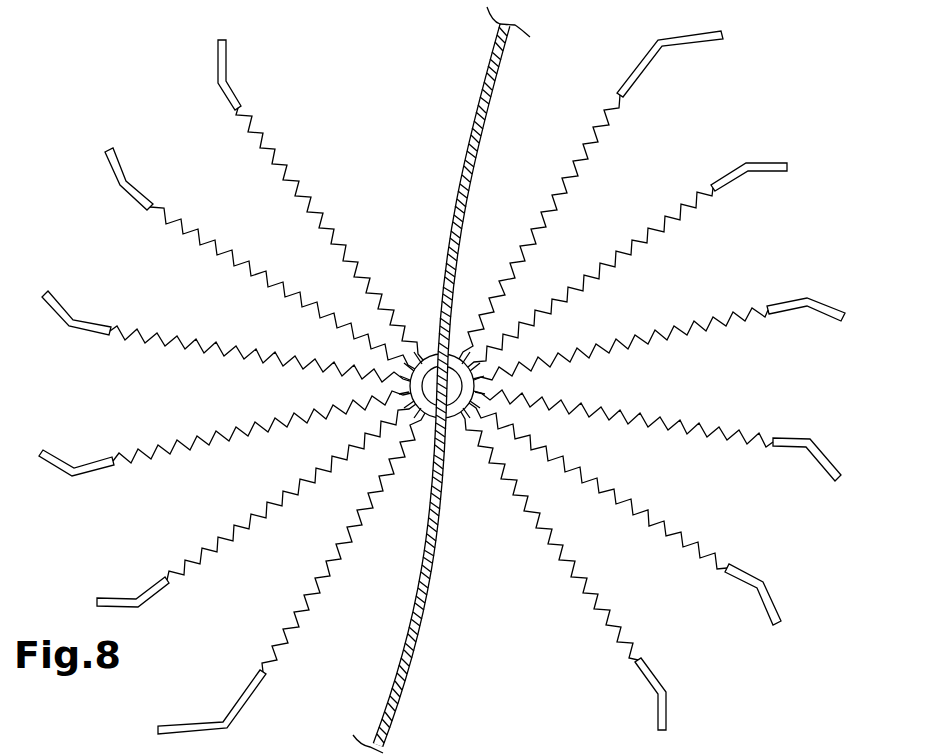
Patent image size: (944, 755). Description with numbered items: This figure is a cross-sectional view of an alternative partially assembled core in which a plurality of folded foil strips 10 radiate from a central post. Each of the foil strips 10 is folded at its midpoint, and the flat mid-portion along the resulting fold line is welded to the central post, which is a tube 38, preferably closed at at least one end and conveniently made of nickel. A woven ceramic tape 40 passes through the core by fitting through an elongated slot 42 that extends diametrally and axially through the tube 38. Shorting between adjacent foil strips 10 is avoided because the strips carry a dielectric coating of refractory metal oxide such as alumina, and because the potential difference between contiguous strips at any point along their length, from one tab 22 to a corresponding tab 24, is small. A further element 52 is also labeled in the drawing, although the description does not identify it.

The foil strips 10 is at (228, 423).
The tab 22 is at (118, 162).
The tab 24 is at (50, 294).
The tube 38 is at (497, 387).
The woven ceramic tape 40 is at (484, 77).
The elongated slot 42 is at (474, 388).
The element 52 is at (757, 754).